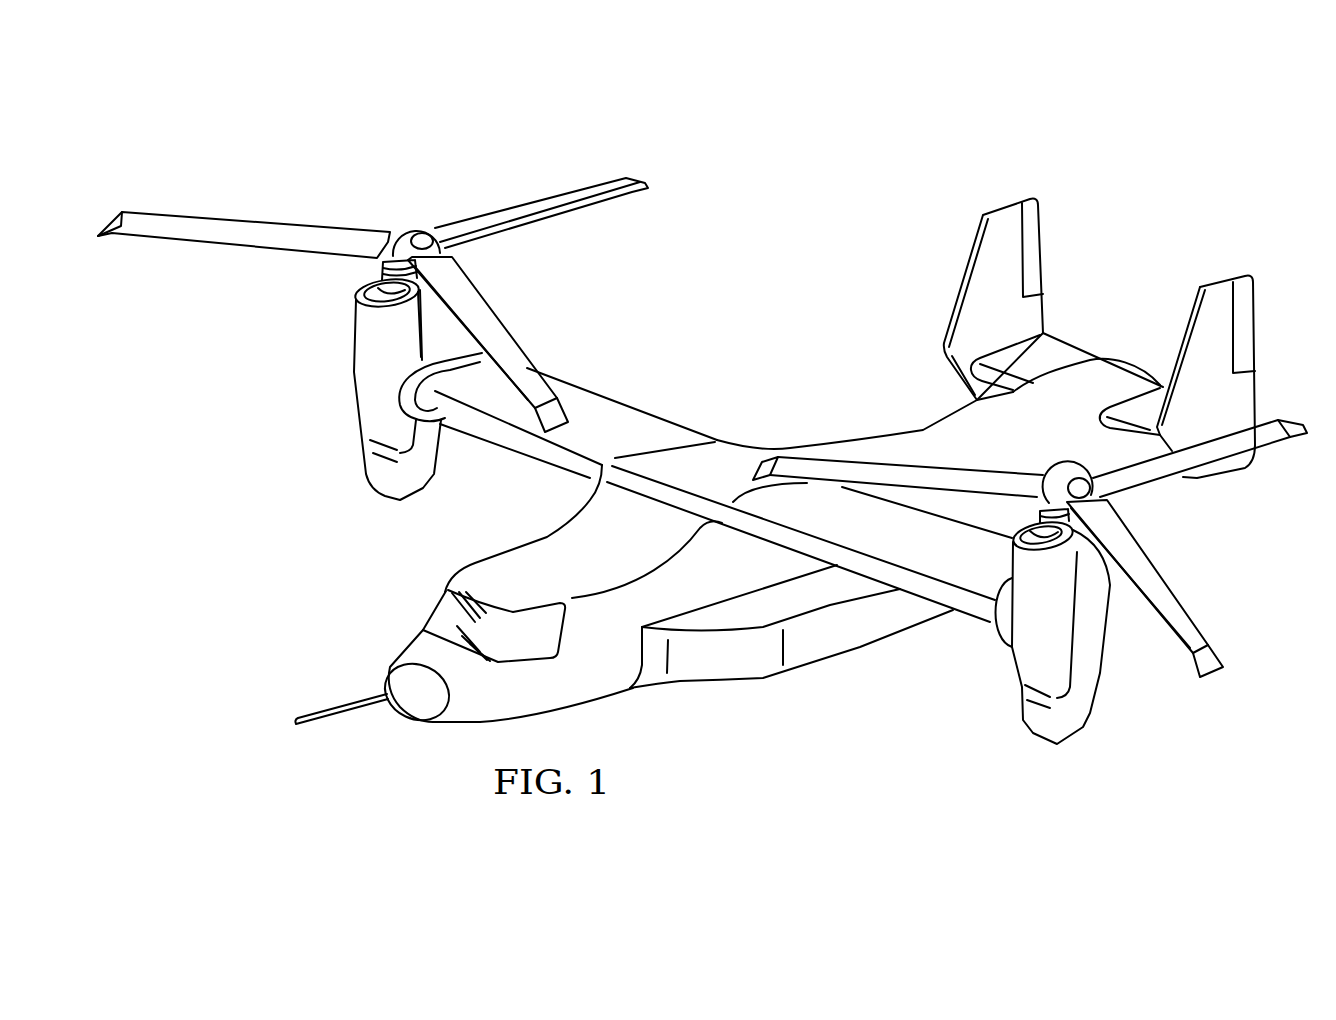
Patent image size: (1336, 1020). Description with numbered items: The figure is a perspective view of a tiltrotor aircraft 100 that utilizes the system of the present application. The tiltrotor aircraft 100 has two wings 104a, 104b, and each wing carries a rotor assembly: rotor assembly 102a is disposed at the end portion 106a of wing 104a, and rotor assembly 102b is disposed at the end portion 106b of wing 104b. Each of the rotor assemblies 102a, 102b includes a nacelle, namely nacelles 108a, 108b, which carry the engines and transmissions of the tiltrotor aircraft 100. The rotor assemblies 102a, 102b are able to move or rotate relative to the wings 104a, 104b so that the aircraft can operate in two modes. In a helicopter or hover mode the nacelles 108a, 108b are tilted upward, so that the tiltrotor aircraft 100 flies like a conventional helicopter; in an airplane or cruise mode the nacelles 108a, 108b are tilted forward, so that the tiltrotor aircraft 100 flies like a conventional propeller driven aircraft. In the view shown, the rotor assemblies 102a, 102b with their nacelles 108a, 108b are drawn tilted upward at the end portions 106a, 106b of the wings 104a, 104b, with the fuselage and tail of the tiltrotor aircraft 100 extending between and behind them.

The tiltrotor aircraft 100 is at (975, 140).
The rotor assembly 102a is at (328, 299).
The rotor assembly 102b is at (1167, 572).
The wing 104a is at (618, 413).
The wing 104b is at (853, 573).
The end portion of wing 106a is at (457, 347).
The end portion of wing 106b is at (1004, 533).
The nacelle 108a is at (356, 401).
The nacelle 108b is at (1100, 684).